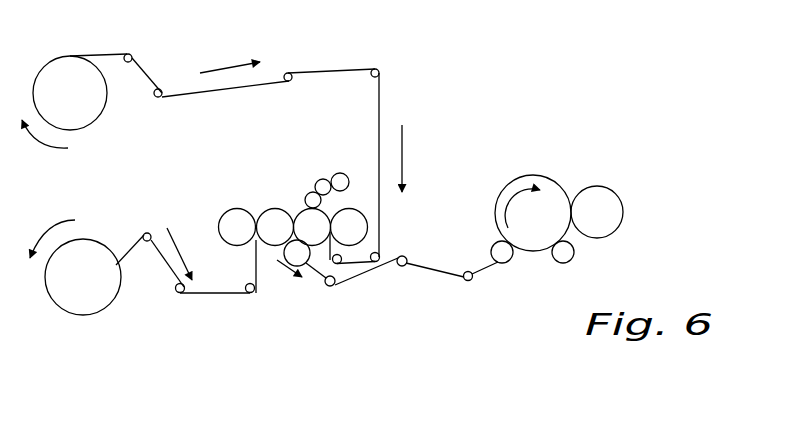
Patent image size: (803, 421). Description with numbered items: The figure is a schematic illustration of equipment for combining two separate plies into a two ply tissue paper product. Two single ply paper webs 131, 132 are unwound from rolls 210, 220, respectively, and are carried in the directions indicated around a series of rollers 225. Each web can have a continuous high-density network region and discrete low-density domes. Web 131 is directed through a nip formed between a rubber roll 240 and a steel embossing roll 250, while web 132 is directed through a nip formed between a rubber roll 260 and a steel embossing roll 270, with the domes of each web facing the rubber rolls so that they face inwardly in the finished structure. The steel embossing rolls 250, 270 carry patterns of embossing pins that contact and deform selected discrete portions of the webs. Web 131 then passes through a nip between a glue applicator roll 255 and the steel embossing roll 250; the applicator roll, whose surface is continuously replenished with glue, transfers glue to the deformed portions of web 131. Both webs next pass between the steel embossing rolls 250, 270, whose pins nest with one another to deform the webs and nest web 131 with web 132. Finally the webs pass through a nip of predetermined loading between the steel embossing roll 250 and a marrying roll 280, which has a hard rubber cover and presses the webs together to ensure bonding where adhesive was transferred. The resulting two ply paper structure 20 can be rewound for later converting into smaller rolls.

The two ply paper structure 20 is at (418, 263).
The paper web 131 is at (137, 67).
The paper web 132 is at (218, 295).
The roll 210 is at (82, 117).
The roll 220 is at (88, 260).
The rollers 225 is at (127, 63).
The rubber roll 240 is at (347, 227).
The steel embossing roll 250 is at (308, 220).
The glue applicator roll 255 is at (312, 197).
The rubber roll 260 is at (238, 218).
The steel embossing roll 270 is at (275, 232).
The marrying roll 280 is at (302, 260).